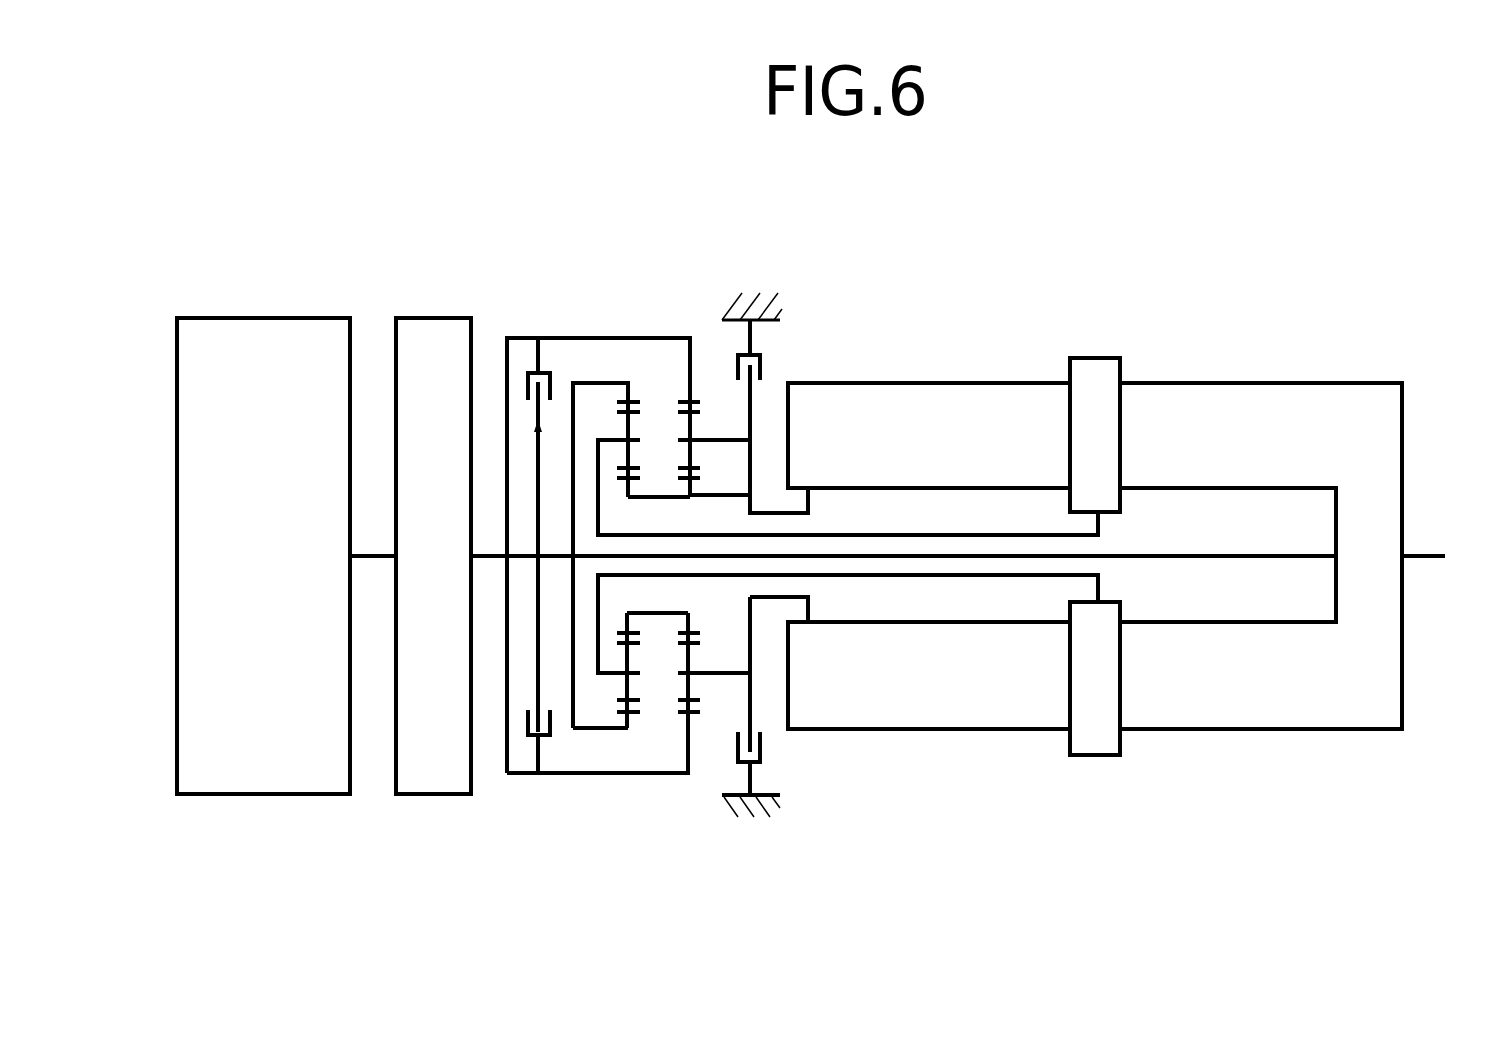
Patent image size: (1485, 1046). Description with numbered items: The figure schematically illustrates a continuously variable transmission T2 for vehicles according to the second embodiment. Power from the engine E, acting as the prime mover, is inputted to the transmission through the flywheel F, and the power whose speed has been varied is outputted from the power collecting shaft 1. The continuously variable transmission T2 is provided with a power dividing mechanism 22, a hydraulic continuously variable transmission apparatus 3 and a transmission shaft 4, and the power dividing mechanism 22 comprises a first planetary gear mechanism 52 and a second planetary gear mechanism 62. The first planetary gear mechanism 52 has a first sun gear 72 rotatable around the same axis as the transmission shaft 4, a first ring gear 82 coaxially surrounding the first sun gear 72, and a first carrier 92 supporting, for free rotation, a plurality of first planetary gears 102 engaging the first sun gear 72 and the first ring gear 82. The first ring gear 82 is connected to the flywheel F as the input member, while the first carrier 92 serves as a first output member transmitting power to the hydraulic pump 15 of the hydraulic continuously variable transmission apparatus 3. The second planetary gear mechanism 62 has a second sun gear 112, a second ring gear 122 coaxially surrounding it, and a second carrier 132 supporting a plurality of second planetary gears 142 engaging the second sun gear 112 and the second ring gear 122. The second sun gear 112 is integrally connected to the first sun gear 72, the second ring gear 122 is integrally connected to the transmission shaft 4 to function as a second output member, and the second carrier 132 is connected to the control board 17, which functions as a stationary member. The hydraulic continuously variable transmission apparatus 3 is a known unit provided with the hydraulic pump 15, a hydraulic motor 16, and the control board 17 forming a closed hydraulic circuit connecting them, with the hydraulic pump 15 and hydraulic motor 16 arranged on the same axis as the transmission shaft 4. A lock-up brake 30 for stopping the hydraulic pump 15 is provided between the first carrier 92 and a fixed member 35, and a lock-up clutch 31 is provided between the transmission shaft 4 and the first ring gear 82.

The engine E is at (288, 571).
The flywheel F is at (447, 571).
The power collecting shaft 1 is at (1420, 553).
The hydraulic continuously variable transmission apparatus 3 is at (1190, 252).
The transmission shaft 4 is at (1177, 558).
The hydraulic pump 15 is at (998, 380).
The hydraulic motor 16 is at (1227, 380).
The control board 17 is at (1095, 370).
The power dividing mechanism 22 is at (682, 262).
The first planetary gear mechanism 52 is at (662, 336).
The second planetary gear mechanism 62 is at (591, 376).
The first sun gear 72 is at (752, 494).
The first ring gear 82 is at (692, 373).
The first carrier 92 is at (752, 453).
The lock-up brake 30 is at (761, 368).
The lock-up clutch 31 is at (528, 733).
The fixed member 35 is at (762, 295).
The first planetary gears 102 is at (700, 683).
The second sun gear 112 is at (643, 610).
The second ring gear 122 is at (622, 718).
The second carrier 132 is at (597, 643).
The second planetary gears 142 is at (627, 688).
The continuously variable transmission T2 is at (797, 775).